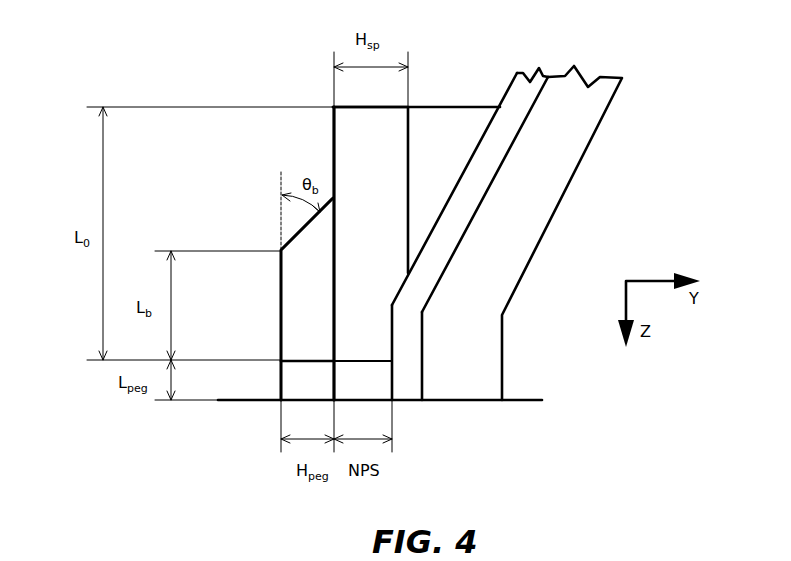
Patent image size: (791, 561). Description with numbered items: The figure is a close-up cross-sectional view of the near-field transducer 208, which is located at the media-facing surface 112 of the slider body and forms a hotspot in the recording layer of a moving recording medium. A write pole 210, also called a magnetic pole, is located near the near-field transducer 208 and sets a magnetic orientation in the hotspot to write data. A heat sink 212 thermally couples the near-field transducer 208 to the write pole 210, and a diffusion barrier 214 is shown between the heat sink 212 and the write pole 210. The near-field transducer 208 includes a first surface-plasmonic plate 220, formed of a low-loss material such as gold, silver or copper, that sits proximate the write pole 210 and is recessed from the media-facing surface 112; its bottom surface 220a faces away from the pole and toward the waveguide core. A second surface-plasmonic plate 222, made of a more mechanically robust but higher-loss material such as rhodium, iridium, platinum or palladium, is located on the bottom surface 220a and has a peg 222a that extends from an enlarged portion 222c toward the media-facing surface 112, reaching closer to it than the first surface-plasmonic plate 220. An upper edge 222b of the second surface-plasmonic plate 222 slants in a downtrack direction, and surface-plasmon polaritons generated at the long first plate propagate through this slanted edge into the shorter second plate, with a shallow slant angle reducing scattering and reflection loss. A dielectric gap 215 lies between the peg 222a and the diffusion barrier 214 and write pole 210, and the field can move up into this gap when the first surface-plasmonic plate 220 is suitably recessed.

The media-facing surface 112 is at (246, 402).
The near-field transducer 208 is at (246, 173).
The write pole 210 is at (475, 392).
The heat sink 212 is at (464, 115).
The diffusion barrier 214 is at (412, 401).
The dielectric gap 215 is at (342, 376).
The first surface-plasmonic plate 220 is at (397, 123).
The bottom surface 220a is at (333, 145).
The second surface-plasmonic plate 222 is at (294, 286).
The peg 222a is at (291, 383).
The upper edge 222b is at (302, 230).
The enlarged portion 222c is at (286, 313).